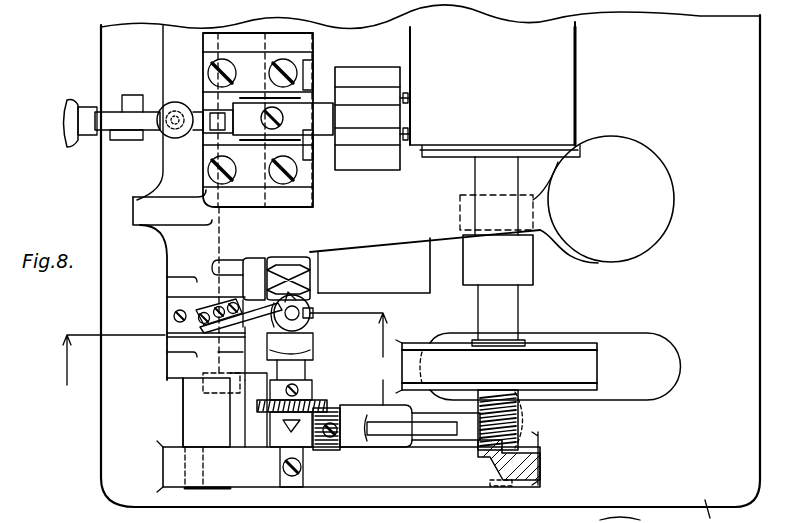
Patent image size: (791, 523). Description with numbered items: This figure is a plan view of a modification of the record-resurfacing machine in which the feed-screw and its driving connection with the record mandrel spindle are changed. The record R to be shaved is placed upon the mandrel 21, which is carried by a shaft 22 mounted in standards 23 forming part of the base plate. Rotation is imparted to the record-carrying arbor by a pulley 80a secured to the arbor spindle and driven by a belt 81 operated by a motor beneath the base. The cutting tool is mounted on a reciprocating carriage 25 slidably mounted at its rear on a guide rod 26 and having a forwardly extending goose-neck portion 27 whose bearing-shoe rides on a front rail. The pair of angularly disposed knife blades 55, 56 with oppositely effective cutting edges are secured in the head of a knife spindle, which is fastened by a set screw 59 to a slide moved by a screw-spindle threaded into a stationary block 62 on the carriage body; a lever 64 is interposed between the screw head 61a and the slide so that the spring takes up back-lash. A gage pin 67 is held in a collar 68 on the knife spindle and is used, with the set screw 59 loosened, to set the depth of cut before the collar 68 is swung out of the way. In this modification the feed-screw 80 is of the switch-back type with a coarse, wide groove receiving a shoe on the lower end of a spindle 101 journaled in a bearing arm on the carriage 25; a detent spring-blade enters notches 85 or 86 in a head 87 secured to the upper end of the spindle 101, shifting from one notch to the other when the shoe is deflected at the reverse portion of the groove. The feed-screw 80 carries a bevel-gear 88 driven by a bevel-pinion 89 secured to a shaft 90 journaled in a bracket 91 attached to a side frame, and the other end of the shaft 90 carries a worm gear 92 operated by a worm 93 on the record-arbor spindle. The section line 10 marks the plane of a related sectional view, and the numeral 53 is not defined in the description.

The record R is at (575, 73).
The mandrel 21 is at (456, 152).
The shaft 22 is at (518, 302).
The standards 23 is at (535, 211).
The carriage 25 is at (176, 250).
The guide rod 26 is at (195, 407).
The goose-neck portion 27 is at (363, 212).
The knob 53 is at (110, 122).
The knife blade 55 is at (410, 98).
The knife blade 56 is at (412, 134).
The set screw 59 is at (172, 110).
The screw head 61a is at (112, 105).
The stationary block 62 is at (305, 57).
The lever 64 is at (135, 132).
The gage pin 67 is at (400, 115).
The collar 68 is at (322, 110).
The feed-screw 80 is at (310, 268).
The pulley 80a is at (597, 348).
The belt 81 is at (575, 355).
The notch 85 is at (312, 302).
The notch 86 is at (284, 310).
The head 87 is at (305, 318).
The bevel-gear 88 is at (266, 406).
The bevel-pinion 89 is at (330, 447).
The shaft 90 is at (401, 432).
The bracket 91 is at (427, 436).
The worm gear 92 is at (528, 411).
The worm 93 is at (520, 423).
The spindle 101 is at (297, 323).
The section line 10 is at (222, 359).